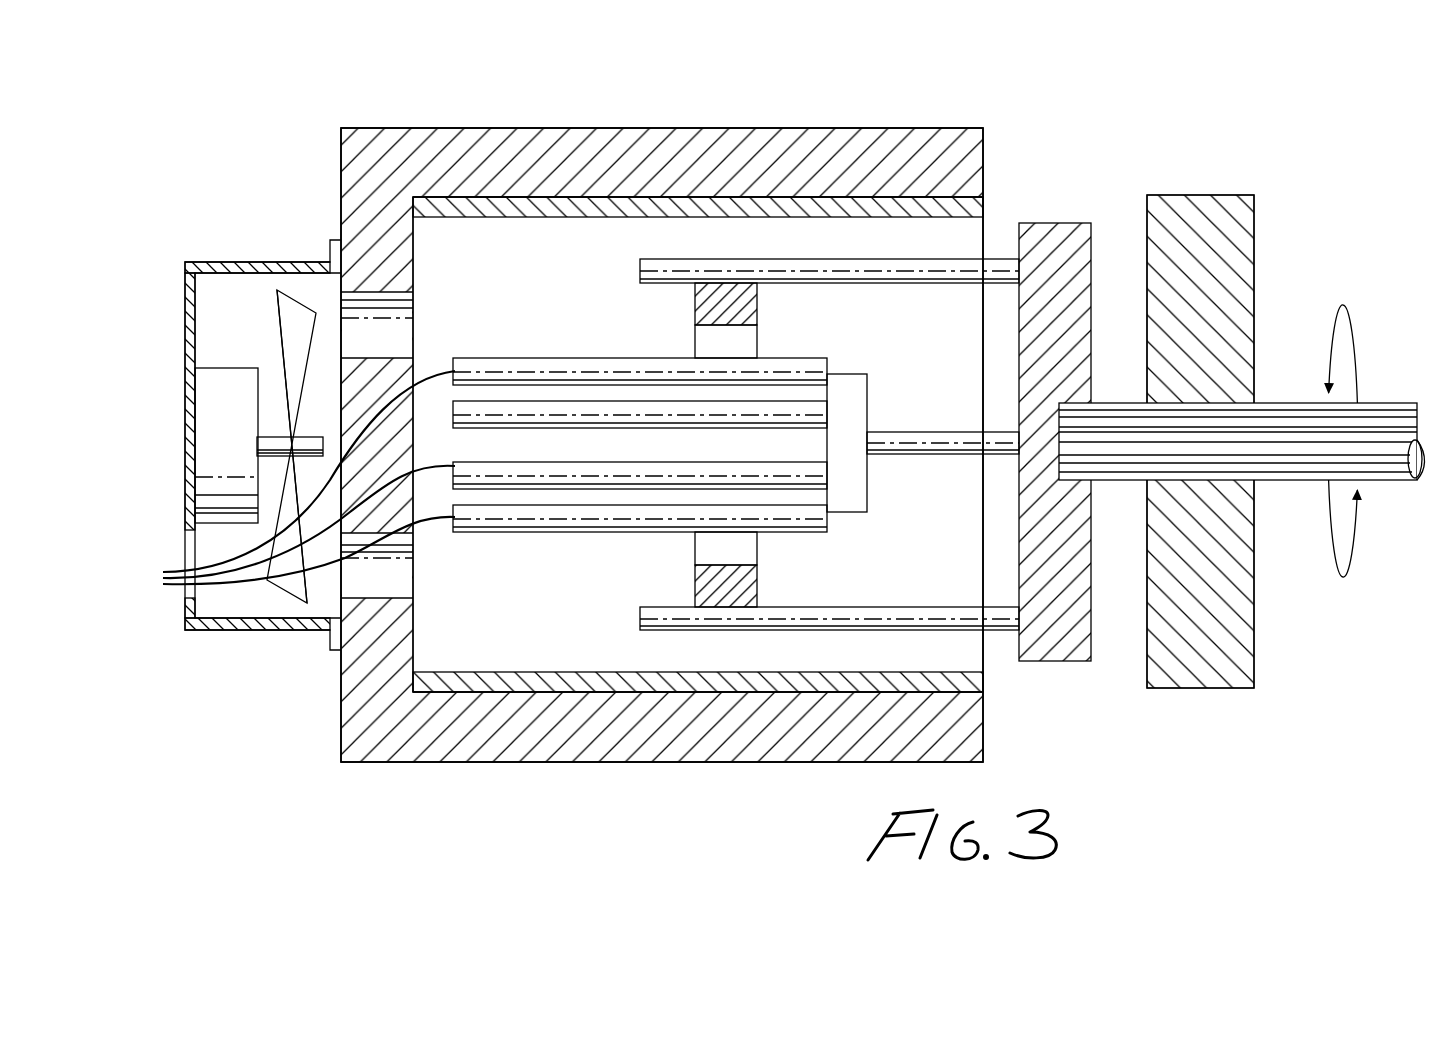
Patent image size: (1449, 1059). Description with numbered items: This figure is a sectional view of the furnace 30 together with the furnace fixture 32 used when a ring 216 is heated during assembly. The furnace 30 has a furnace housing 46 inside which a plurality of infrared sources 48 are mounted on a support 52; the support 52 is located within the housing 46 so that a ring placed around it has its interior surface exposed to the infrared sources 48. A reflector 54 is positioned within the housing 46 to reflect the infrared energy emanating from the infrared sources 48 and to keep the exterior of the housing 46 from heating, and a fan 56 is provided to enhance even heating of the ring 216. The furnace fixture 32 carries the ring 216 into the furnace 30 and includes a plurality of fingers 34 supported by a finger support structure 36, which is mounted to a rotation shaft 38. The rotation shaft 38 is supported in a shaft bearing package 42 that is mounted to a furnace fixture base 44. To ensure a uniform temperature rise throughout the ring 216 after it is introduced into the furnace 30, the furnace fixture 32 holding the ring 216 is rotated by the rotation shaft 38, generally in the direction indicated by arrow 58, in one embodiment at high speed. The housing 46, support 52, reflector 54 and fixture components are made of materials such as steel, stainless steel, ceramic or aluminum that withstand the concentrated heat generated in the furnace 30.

The furnace 30 is at (522, 126).
The furnace housing 46 is at (670, 128).
The ring 216 is at (737, 288).
The finger support structure 36 is at (1057, 225).
The furnace fixture 32 is at (1144, 167).
The shaft bearing package 42 is at (1130, 403).
The furnace fixture base 44 is at (1203, 196).
The arrow 58 is at (1355, 326).
The rotation shaft 38 is at (1393, 480).
The support 52 is at (850, 483).
The fingers 34 is at (953, 625).
The reflector 54 is at (766, 672).
The fan 56 is at (285, 303).
The infrared sources 48 is at (479, 477).